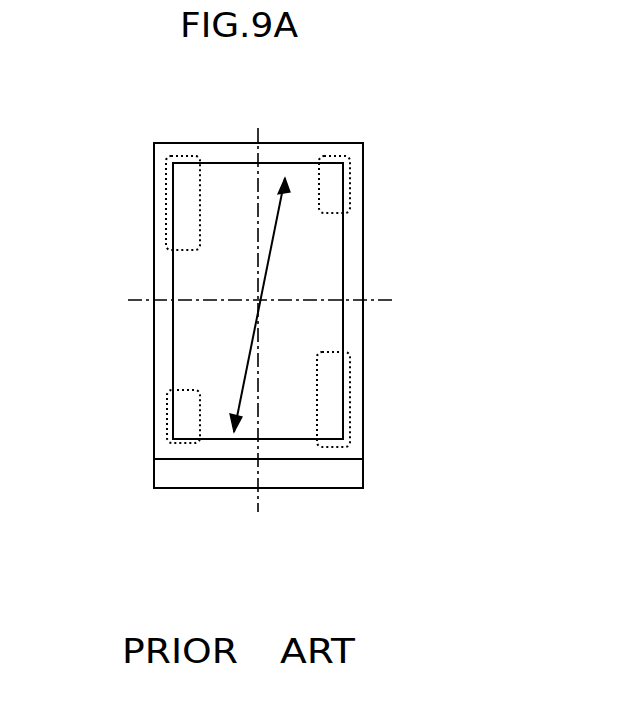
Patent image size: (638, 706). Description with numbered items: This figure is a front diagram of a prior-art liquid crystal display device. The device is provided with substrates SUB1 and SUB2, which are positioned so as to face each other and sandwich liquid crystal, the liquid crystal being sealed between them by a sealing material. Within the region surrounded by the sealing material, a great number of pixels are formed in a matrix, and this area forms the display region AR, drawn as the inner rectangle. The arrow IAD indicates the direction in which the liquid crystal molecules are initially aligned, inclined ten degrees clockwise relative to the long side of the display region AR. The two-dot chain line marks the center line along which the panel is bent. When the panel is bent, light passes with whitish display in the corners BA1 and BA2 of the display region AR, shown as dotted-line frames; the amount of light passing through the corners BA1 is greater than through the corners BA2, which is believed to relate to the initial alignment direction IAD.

The substrate SUB1 is at (223, 472).
The substrate SUB2 is at (350, 143).
The display region AR is at (221, 193).
The corners BA1 is at (168, 205).
The corners BA2 is at (350, 184).
The direction in which liquid crystal molecules are initially aligned IAD is at (287, 178).